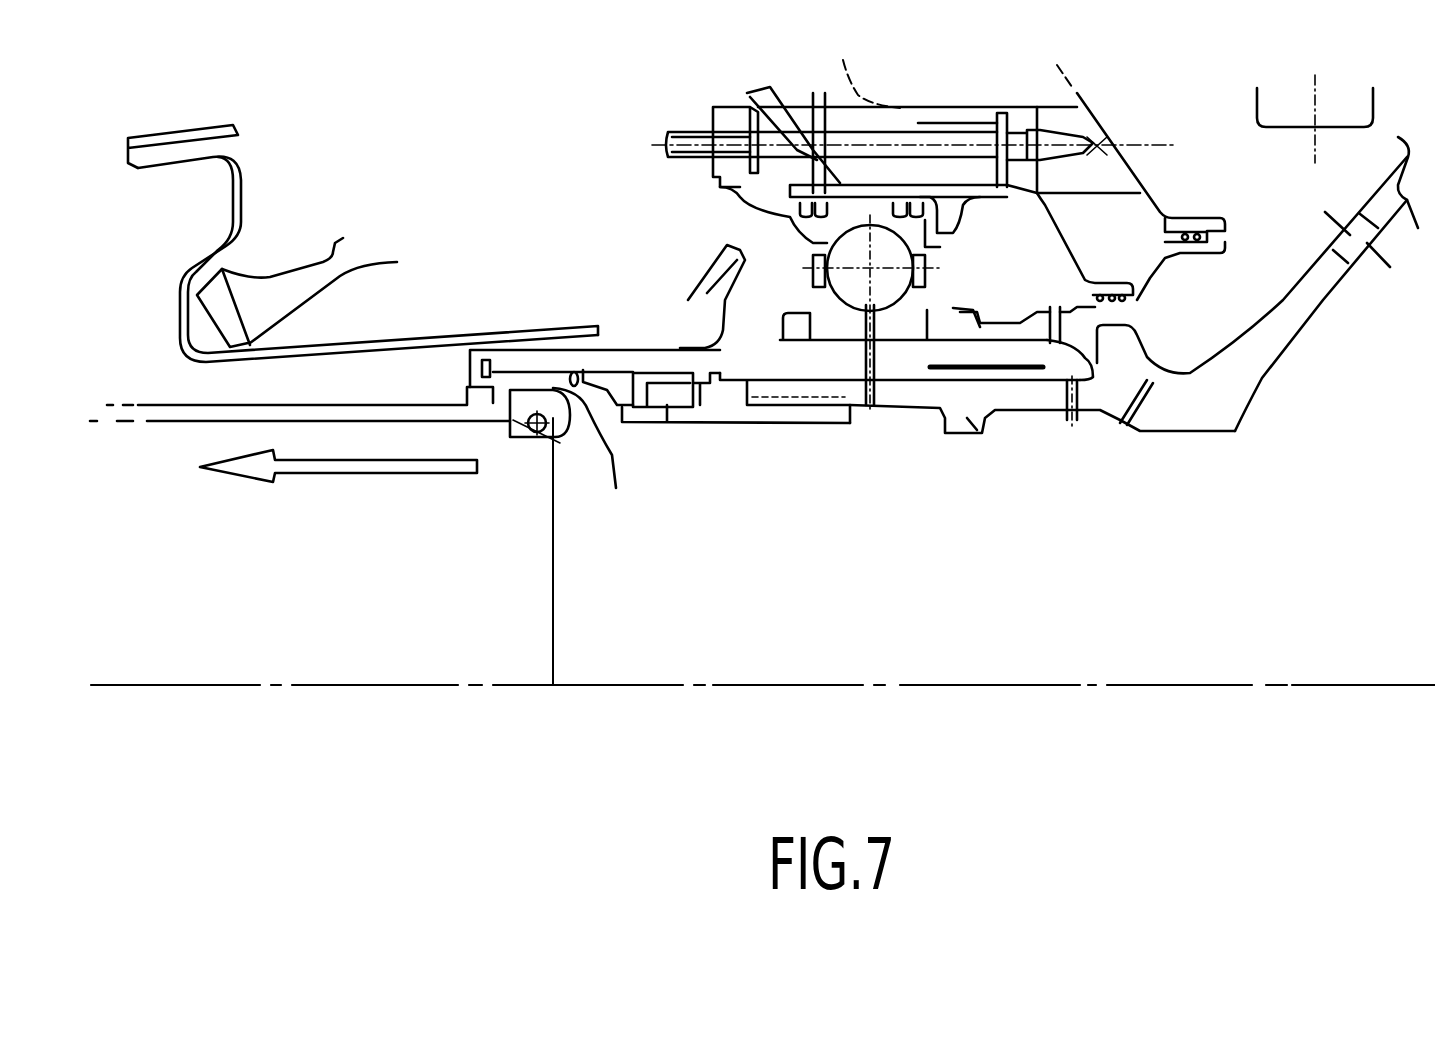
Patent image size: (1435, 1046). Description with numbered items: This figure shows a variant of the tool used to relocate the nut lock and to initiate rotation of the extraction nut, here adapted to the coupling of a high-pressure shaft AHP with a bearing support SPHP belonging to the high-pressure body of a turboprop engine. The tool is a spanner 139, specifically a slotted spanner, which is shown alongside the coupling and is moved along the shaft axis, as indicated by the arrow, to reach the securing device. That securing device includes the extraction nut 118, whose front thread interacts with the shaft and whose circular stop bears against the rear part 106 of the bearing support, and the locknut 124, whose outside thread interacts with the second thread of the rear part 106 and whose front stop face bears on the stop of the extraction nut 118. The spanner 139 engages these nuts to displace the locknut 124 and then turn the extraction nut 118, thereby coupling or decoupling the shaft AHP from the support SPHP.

The rear part 106 is at (538, 363).
The locknut 124 is at (668, 387).
The extraction nut 118 is at (703, 413).
The spanner 139 is at (175, 410).
The bearing support SPHP is at (713, 188).
The high-pressure shaft AHP is at (977, 437).